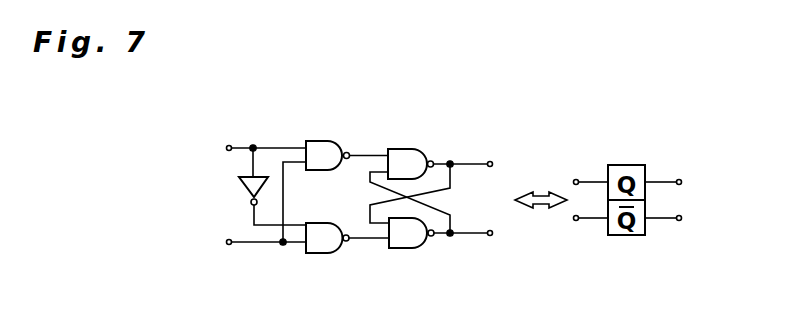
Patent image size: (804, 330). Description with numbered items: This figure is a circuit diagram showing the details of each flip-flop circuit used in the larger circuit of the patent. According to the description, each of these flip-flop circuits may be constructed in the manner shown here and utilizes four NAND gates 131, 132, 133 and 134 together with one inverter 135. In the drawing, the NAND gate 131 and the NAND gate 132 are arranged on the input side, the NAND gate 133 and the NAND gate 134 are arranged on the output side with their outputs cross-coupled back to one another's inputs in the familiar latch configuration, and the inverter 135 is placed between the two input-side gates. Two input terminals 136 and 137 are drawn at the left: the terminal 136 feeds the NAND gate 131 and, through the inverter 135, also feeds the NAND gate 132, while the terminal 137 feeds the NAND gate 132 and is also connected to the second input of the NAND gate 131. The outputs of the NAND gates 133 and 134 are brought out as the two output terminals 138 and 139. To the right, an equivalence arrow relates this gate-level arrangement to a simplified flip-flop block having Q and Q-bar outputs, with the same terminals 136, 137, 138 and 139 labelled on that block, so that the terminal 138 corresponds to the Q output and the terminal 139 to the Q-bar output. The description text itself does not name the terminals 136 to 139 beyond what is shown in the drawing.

The NAND gate 131 is at (320, 148).
The NAND gate 132 is at (315, 246).
The NAND gate 133 is at (432, 156).
The NAND gate 134 is at (424, 235).
The inverter 135 is at (241, 181).
The set input terminal 136 is at (228, 146).
The reset input terminal 137 is at (228, 244).
The Q output terminal 138 is at (492, 162).
The Q-bar output terminal 139 is at (493, 234).